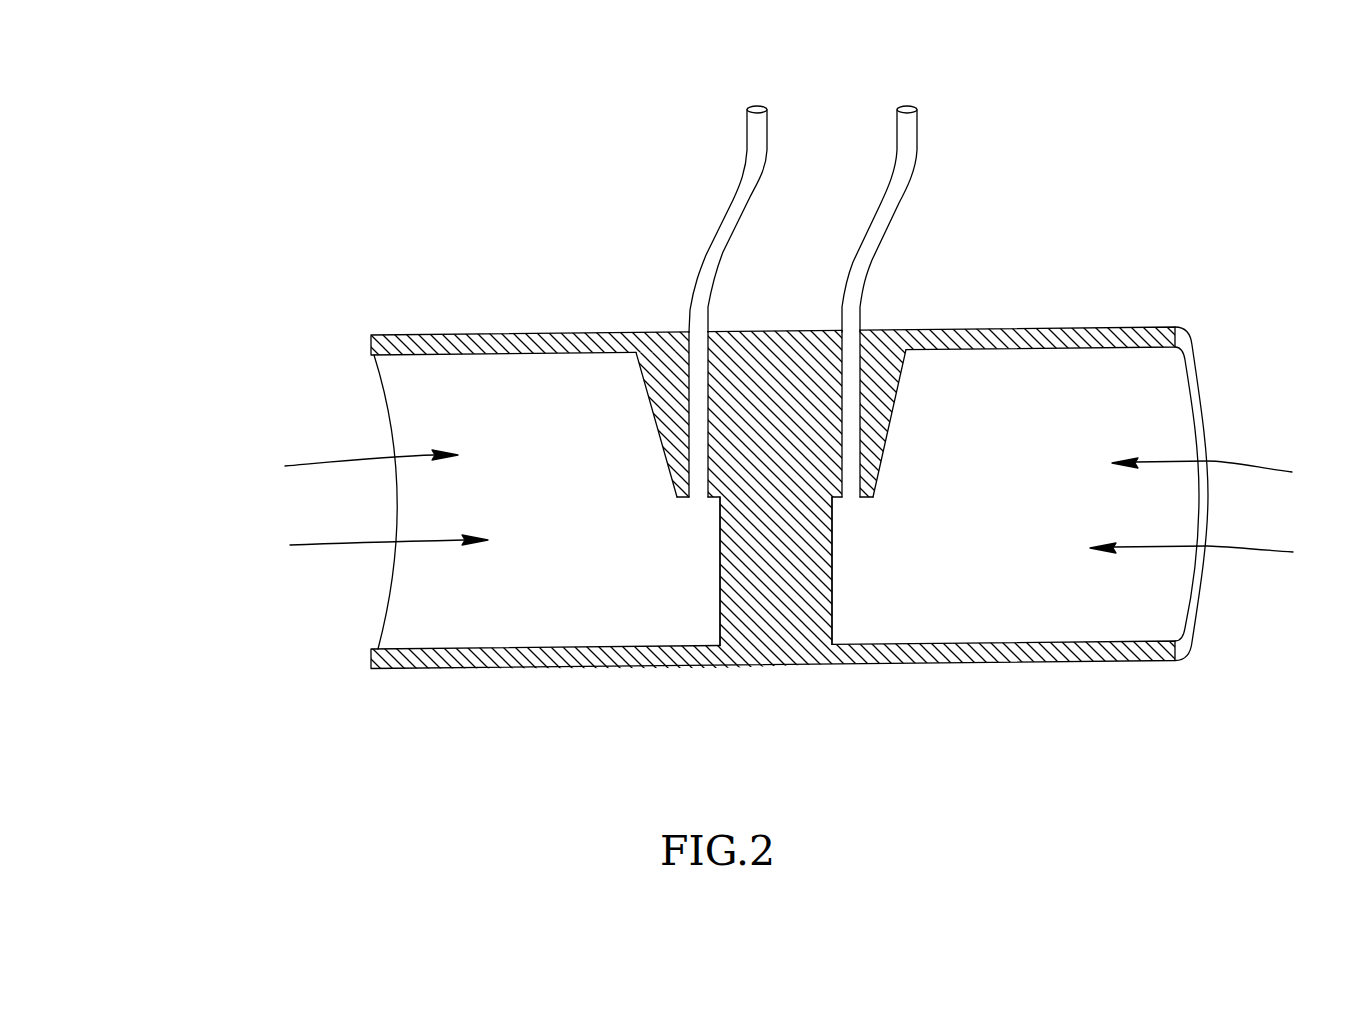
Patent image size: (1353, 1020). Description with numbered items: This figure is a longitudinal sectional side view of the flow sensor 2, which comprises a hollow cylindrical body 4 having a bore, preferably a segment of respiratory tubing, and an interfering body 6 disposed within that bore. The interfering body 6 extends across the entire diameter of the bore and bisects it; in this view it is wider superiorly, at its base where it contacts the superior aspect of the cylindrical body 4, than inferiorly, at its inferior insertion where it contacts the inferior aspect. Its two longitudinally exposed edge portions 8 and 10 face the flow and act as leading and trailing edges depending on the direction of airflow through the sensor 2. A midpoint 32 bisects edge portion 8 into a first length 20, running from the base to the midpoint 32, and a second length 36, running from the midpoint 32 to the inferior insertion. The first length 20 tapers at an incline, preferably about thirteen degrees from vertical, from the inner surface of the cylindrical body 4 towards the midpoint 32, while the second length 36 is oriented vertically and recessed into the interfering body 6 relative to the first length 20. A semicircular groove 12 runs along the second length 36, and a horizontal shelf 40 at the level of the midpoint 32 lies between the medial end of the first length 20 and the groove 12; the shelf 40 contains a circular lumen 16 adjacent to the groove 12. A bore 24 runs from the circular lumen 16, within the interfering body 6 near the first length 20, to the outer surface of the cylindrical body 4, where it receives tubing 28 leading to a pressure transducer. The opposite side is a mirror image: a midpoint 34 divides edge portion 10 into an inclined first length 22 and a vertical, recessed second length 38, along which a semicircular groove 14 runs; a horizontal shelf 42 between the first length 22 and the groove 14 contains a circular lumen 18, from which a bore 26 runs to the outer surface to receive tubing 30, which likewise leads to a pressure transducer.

The flow sensor 2 is at (398, 190).
The cylindrical body 4 is at (457, 669).
The interfering body 6 is at (770, 590).
The edge portion 8 is at (1211, 473).
The edge portion 10 is at (350, 468).
The semicircular groove 12 is at (832, 587).
The semicircular groove 14 is at (718, 587).
The circular lumen 16 is at (848, 500).
The circular lumen 18 is at (698, 500).
The first length 20 is at (897, 390).
The first length 22 is at (649, 393).
The bore 24 is at (852, 348).
The bore 26 is at (695, 345).
The tubing 28 is at (908, 105).
The tubing 30 is at (753, 133).
The midpoint 32 is at (873, 498).
The midpoint 34 is at (677, 498).
The second length 36 is at (1208, 554).
The second length 38 is at (366, 548).
The horizontal shelf 40 is at (867, 500).
The horizontal shelf 42 is at (688, 500).